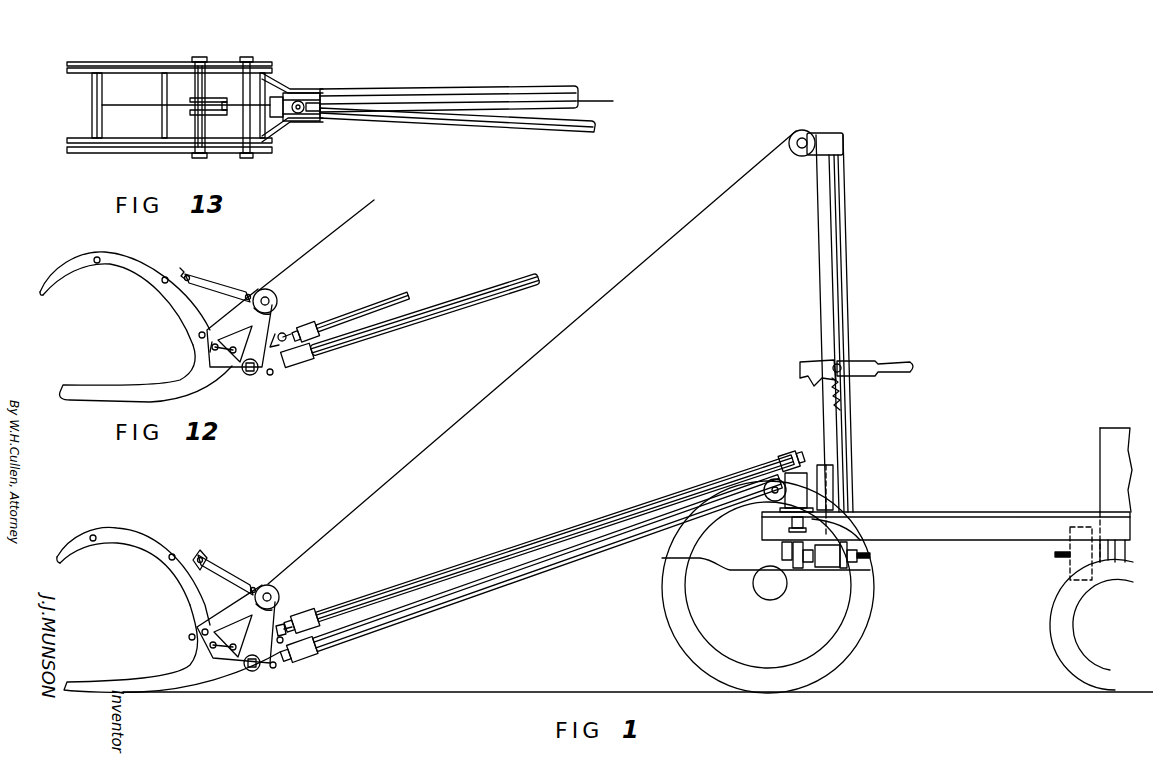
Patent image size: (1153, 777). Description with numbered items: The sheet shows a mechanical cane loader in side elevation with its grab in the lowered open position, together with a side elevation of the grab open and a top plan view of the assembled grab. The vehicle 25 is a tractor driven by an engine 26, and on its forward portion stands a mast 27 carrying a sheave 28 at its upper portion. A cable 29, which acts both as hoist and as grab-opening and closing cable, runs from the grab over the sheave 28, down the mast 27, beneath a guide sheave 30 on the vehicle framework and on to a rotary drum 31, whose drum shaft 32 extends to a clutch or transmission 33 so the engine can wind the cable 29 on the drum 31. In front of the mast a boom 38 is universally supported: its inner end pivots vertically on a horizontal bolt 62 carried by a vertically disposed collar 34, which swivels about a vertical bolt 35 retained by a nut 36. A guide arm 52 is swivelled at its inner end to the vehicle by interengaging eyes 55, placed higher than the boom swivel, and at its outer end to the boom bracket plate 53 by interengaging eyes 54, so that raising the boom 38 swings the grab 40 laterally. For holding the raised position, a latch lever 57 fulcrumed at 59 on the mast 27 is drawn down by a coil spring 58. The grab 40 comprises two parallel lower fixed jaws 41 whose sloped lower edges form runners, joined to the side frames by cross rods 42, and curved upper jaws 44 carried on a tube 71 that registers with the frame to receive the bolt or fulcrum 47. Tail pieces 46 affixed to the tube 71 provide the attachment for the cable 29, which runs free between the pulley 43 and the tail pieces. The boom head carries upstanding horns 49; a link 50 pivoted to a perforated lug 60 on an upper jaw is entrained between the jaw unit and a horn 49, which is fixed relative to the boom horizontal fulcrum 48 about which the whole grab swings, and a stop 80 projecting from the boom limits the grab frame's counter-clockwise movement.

In FIG. 1, the vehicle 25 is at (983, 540).
In FIG. 1, the engine 26 is at (1094, 489).
In FIG. 1, the mast 27 is at (852, 300).
In FIG. 1, the sheave 28 is at (805, 131).
In FIG. 13, the cable 29 is at (607, 100).
In FIG. 12, the cable 29 is at (316, 245).
In FIG. 1, the cable 29 is at (658, 255).
In FIG. 1, the guide sheave 30 is at (768, 587).
In FIG. 1, the rotary drum 31 is at (829, 568).
In FIG. 1, the drum shaft 32 is at (872, 557).
In FIG. 1, the clutch or transmission 33 is at (1075, 570).
In FIG. 1, the collar 34 is at (1091, 624).
In FIG. 1, the bolt 35 is at (788, 459).
In FIG. 1, the nut 36 is at (790, 522).
In FIG. 13, the boom 38 is at (478, 95).
In FIG. 12, the boom 38 is at (432, 325).
In FIG. 1, the boom 38 is at (458, 612).
In FIG. 12, the grab 40 is at (239, 328).
In FIG. 1, the grab 40 is at (198, 668).
In FIG. 13, the lower fixed jaws 41 is at (140, 63).
In FIG. 12, the lower fixed jaws 41 is at (140, 372).
In FIG. 1, the lower fixed jaws 41 is at (172, 648).
In FIG. 13, the cross rods 42 is at (162, 104).
In FIG. 13, the pulley 43 is at (281, 95).
In FIG. 12, the pulley 43 is at (277, 301).
In FIG. 1, the pulley 43 is at (267, 597).
In FIG. 13, the upper jaws 44 is at (85, 74).
In FIG. 12, the upper jaws 44 is at (148, 270).
In FIG. 1, the upper jaws 44 is at (133, 576).
In FIG. 13, the tail pieces 46 is at (226, 113).
In FIG. 13, the bolt or fulcrum 47 is at (201, 57).
In FIG. 12, the bolt or fulcrum 47 is at (198, 336).
In FIG. 13, the boom horizontal fulcrum 48 is at (248, 58).
In FIG. 12, the boom horizontal fulcrum 48 is at (258, 372).
In FIG. 1, the boom horizontal fulcrum 48 is at (252, 663).
In FIG. 13, the horns 49 is at (284, 82).
In FIG. 12, the horns 49 is at (233, 360).
In FIG. 1, the horns 49 is at (223, 646).
In FIG. 12, the link 50 is at (232, 286).
In FIG. 1, the link 50 is at (224, 572).
In FIG. 13, the guide arm 52 is at (526, 123).
In FIG. 12, the guide arm 52 is at (345, 322).
In FIG. 1, the guide arm 52 is at (466, 566).
In FIG. 1, the boom bracket plate 53 is at (282, 645).
In FIG. 1, the interengaging eyes 54 is at (283, 628).
In FIG. 1, the interengaging eyes 55 is at (824, 455).
In FIG. 1, the latch lever 57 is at (862, 363).
In FIG. 1, the coil spring 58 is at (860, 394).
In FIG. 1, the fulcrum 59 is at (832, 364).
In FIG. 12, the perforated lug 60 is at (180, 267).
In FIG. 1, the horizontal bolt 62 is at (764, 488).
In FIG. 13, the tube 71 is at (204, 88).
In FIG. 12, the stop 80 is at (275, 373).
In FIG. 1, the stop 80 is at (273, 669).